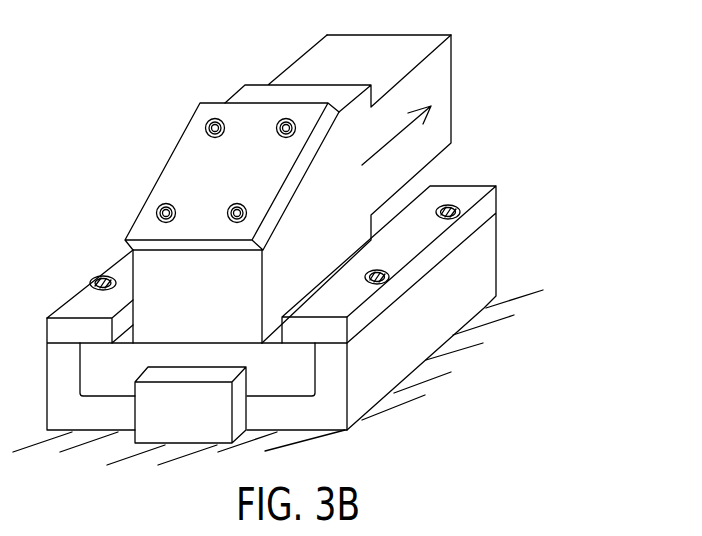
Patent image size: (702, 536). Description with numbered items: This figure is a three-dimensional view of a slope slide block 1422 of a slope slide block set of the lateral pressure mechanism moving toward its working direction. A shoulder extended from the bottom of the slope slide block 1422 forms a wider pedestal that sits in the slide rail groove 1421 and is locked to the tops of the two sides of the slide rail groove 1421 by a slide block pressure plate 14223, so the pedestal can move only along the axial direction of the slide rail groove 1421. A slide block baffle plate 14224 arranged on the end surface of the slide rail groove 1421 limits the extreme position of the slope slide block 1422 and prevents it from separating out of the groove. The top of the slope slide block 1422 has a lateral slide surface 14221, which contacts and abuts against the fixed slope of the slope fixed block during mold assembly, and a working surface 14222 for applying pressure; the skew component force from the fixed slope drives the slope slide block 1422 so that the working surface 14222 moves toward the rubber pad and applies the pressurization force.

The slide rail groove 1421 is at (398, 352).
The slope slide block 1422 is at (320, 236).
The lateral slide surface 14221 is at (210, 160).
The working surface 14222 is at (454, 72).
The slide block pressure plate 14223 is at (83, 305).
The slide block baffle plate 14224 is at (168, 374).